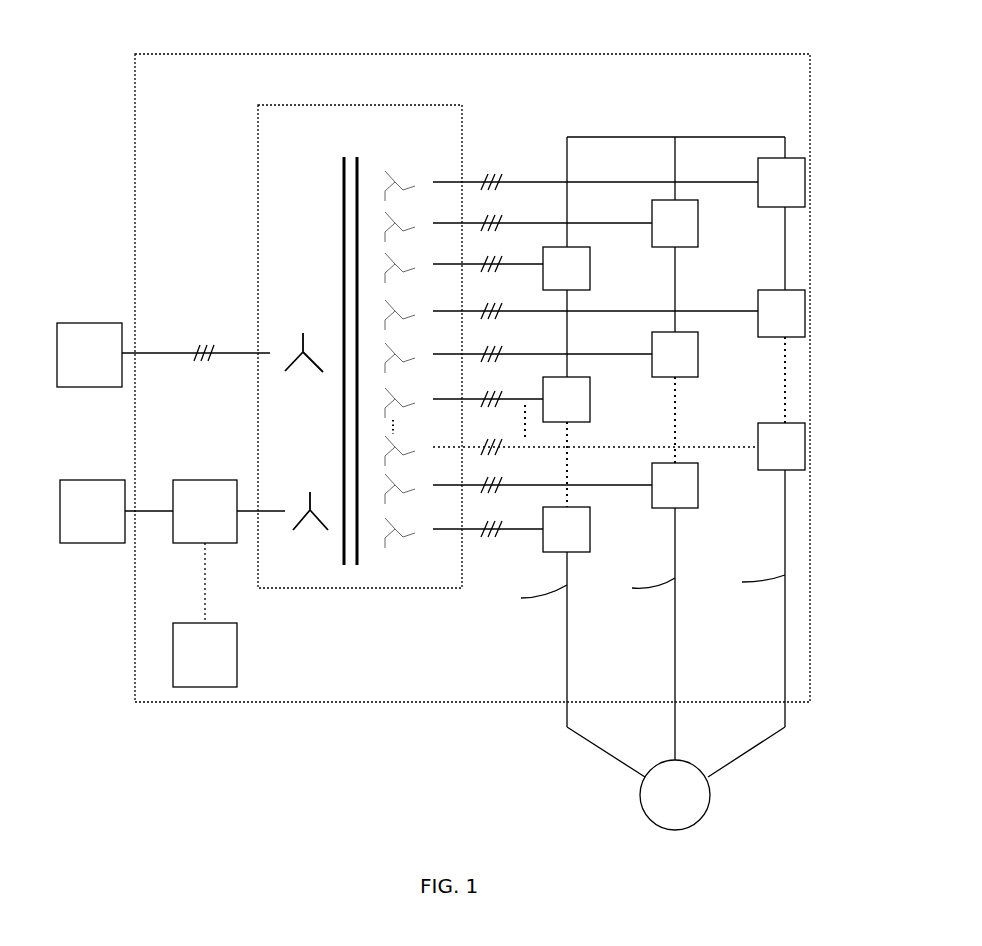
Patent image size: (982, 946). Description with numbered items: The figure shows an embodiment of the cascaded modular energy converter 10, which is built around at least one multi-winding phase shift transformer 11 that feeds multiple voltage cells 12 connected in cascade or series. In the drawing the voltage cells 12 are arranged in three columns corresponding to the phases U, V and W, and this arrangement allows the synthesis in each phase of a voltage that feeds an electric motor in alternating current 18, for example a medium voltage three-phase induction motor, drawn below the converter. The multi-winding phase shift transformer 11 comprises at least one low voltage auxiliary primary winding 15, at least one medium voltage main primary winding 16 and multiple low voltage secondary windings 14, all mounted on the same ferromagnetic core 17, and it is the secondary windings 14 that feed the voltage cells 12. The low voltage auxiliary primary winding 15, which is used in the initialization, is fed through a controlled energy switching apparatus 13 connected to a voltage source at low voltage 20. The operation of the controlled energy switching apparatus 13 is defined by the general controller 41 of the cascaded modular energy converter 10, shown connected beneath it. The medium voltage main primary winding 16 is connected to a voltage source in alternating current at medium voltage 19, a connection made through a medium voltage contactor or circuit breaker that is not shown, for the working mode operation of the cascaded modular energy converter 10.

The cascaded modular energy converter 10 is at (157, 52).
The multi-winding phase shift transformer 11 is at (280, 100).
The voltage cells 12 is at (785, 158).
The controlled energy switching apparatus 13 is at (208, 475).
The low voltage secondary windings 14 is at (395, 160).
The low voltage auxiliary primary winding 15 is at (306, 532).
The medium voltage main primary winding 16 is at (292, 335).
The ferromagnetic core 17 is at (350, 155).
The electric motor in alternating current 18 is at (718, 818).
The voltage source in alternating current at medium voltage 19 is at (97, 317).
The voltage source at low voltage 20 is at (97, 476).
The general controller 41 is at (240, 670).